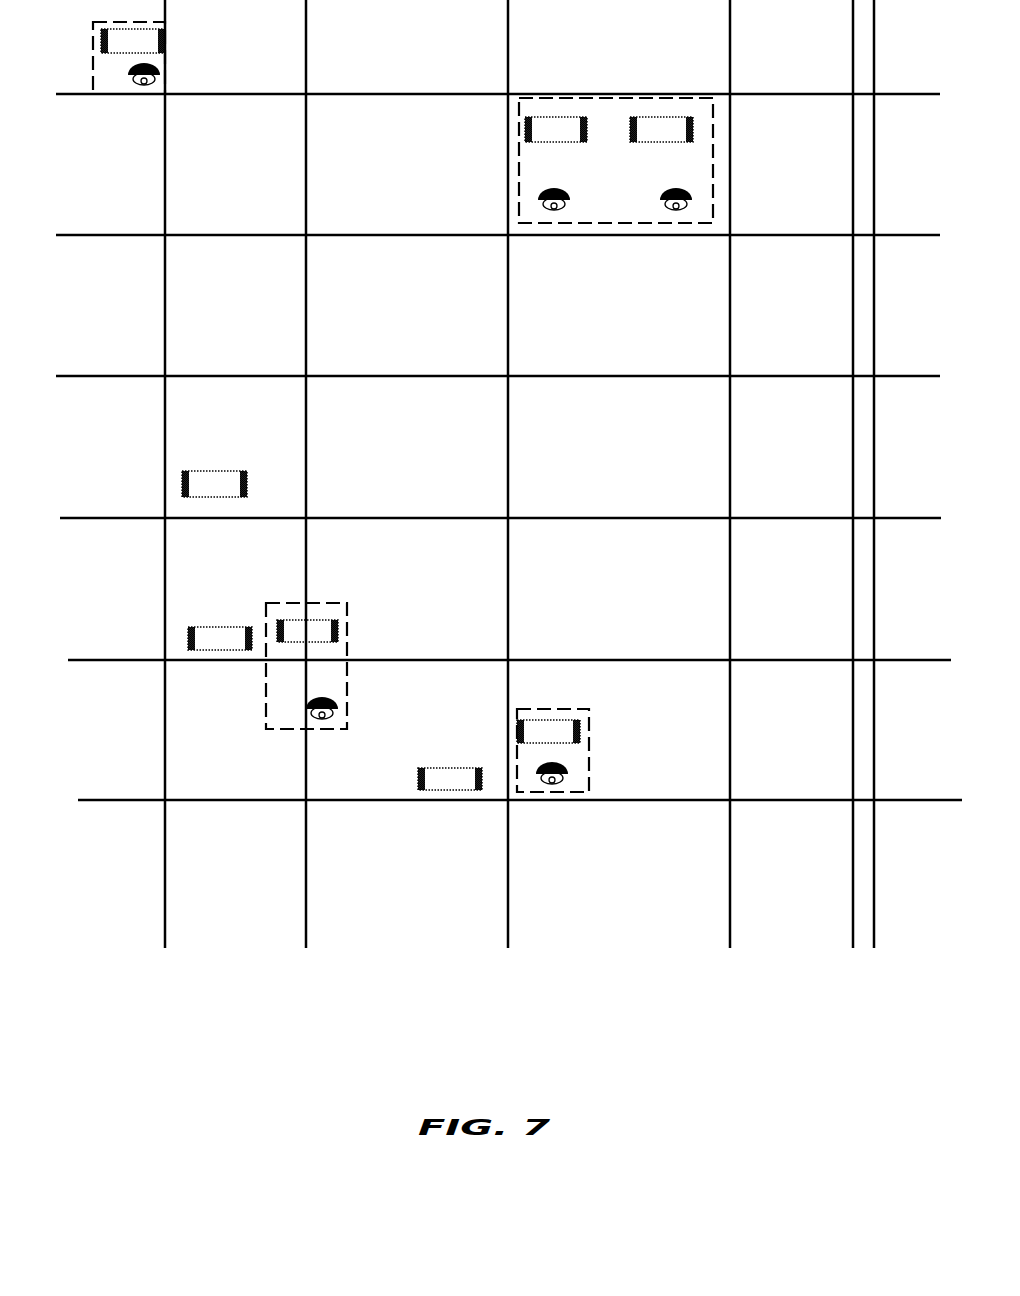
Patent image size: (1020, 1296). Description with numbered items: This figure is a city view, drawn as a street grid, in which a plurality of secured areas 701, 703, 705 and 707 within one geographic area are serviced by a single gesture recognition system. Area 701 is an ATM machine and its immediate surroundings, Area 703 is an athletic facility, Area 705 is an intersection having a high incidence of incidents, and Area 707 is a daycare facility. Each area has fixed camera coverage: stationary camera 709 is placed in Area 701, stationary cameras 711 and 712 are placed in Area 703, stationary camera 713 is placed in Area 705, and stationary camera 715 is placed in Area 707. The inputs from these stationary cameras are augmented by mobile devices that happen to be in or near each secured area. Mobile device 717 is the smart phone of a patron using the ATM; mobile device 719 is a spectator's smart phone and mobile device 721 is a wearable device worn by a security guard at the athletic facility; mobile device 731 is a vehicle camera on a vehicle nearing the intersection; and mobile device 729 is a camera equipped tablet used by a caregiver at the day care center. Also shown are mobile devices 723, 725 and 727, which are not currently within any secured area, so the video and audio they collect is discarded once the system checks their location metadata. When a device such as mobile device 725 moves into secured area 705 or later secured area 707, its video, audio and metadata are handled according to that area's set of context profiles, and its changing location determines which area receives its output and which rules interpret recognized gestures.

The secured area 701 is at (108, 69).
The secured area 703 is at (616, 160).
The secured area 705 is at (306, 666).
The secured area 707 is at (575, 740).
The stationary camera 709 is at (160, 72).
The stationary camera 711 is at (566, 205).
The stationary camera 712 is at (688, 205).
The stationary camera 713 is at (338, 712).
The stationary camera 715 is at (566, 780).
The mobile device 717 is at (133, 40).
The mobile device 719 is at (556, 129).
The mobile device 721 is at (661, 129).
The mobile device 723 is at (214, 484).
The mobile device 725 is at (220, 637).
The mobile device 727 is at (450, 777).
The mobile device 729 is at (548, 730).
The mobile device 731 is at (307, 629).